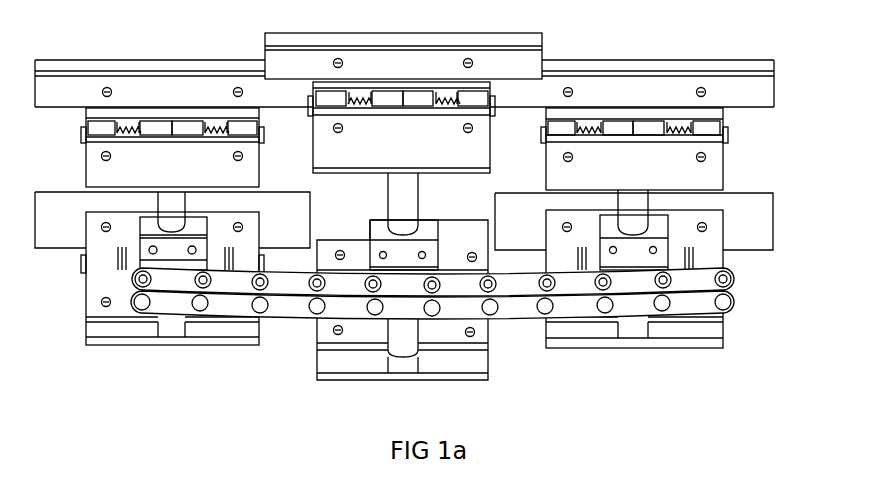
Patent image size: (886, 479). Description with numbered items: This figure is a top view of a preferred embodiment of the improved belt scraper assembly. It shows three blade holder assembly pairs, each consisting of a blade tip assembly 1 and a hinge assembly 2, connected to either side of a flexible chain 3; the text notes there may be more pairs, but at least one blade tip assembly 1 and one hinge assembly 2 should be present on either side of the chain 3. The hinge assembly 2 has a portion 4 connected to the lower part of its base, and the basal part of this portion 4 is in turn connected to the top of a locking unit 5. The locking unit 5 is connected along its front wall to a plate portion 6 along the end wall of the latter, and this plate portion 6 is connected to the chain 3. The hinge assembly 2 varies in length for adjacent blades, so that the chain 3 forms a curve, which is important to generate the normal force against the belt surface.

The blade tip assembly 1 is at (730, 53).
The hinge assembly 2 is at (727, 164).
The flexible chain 3 is at (742, 305).
The portion 4 is at (422, 198).
The locking unit 5 is at (368, 215).
The plate portion 6 is at (443, 260).